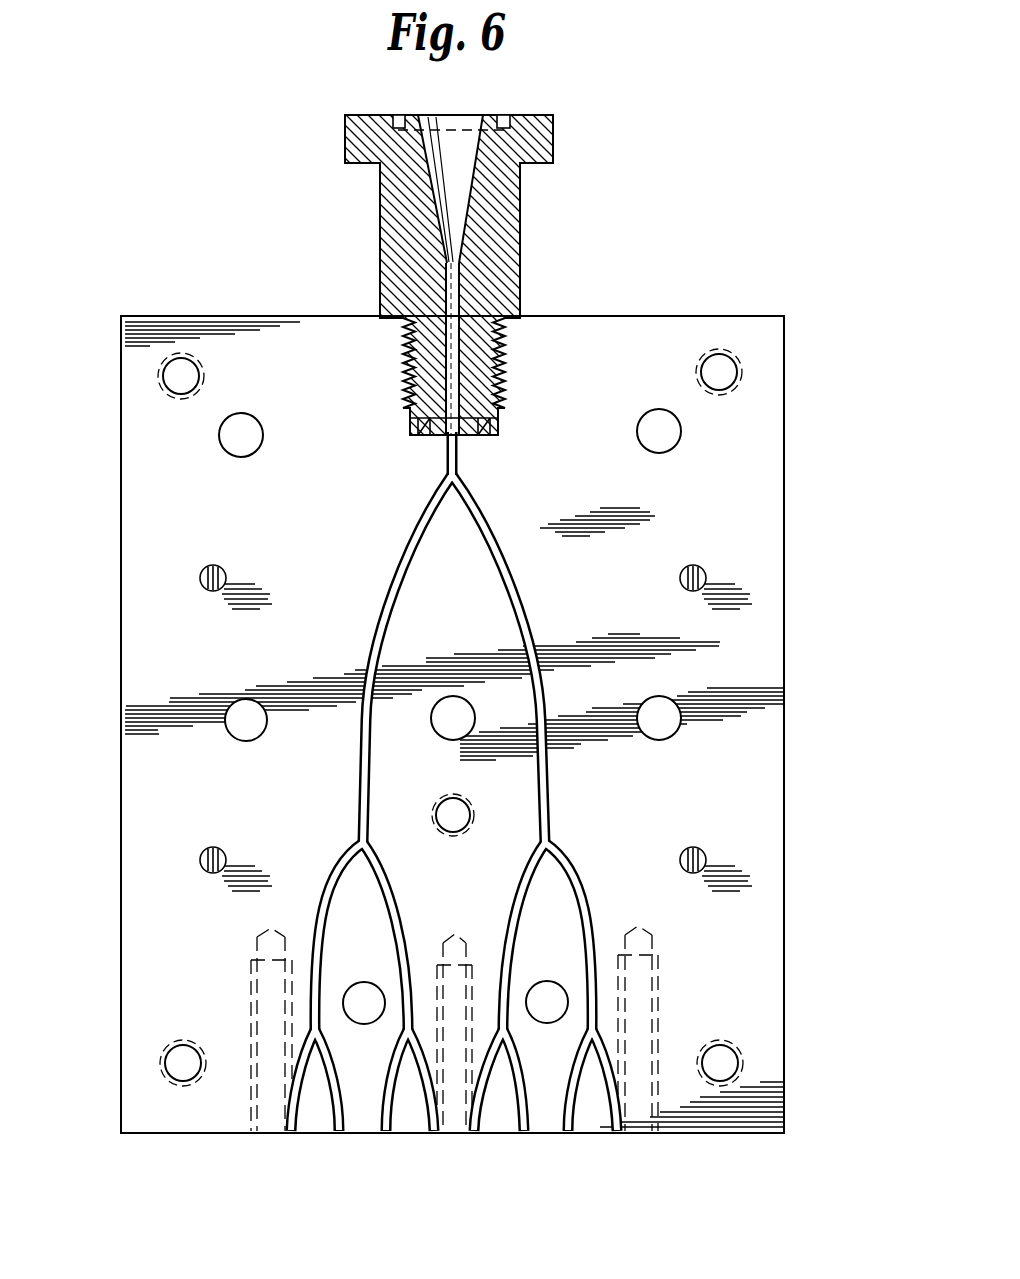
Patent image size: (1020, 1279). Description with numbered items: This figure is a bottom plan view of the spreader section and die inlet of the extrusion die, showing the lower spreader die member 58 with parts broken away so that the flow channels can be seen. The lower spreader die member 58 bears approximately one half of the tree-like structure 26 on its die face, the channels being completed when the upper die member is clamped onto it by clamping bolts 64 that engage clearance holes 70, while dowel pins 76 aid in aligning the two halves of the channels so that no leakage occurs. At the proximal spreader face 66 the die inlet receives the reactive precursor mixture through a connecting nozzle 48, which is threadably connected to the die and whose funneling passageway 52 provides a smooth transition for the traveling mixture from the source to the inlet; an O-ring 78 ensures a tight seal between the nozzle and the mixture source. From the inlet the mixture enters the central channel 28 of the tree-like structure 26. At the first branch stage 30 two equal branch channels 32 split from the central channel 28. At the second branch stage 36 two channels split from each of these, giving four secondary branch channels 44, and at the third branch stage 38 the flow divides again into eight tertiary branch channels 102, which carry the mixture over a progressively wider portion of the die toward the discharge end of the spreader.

The tree-like structure 26 is at (505, 498).
The central channel 28 is at (460, 386).
The first branch stage 30 is at (555, 572).
The branch channels 32 is at (532, 622).
The second branch stage 36 is at (600, 862).
The third branch stage 38 is at (655, 1097).
The secondary branch channels 44 is at (320, 921).
The connecting nozzle 48 is at (524, 262).
The funneling passageway 52 is at (476, 185).
The lower spreader die member 58 is at (812, 718).
The clamping bolts 64 is at (194, 1138).
The proximal spreader face 66 is at (185, 314).
The clearance holes 70 is at (680, 432).
The dowel pins 76 is at (705, 572).
The O-ring 78 is at (505, 115).
The tertiary branch channels 102 is at (293, 1086).